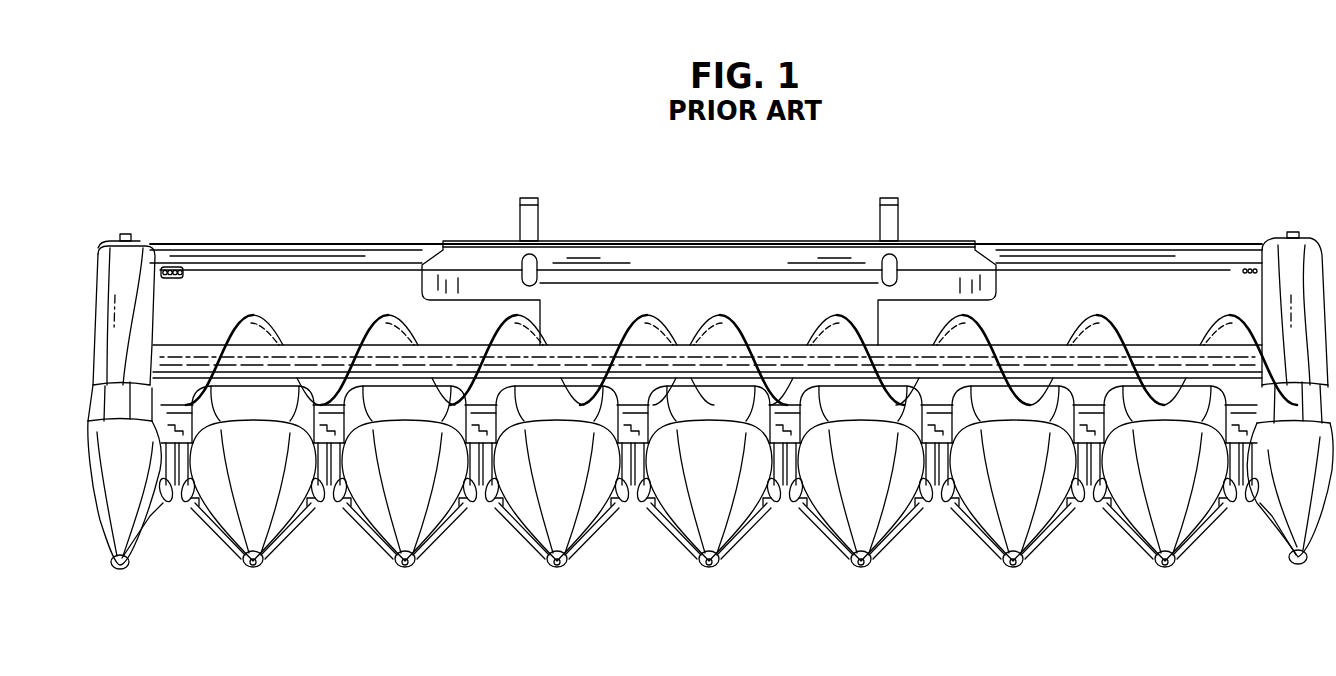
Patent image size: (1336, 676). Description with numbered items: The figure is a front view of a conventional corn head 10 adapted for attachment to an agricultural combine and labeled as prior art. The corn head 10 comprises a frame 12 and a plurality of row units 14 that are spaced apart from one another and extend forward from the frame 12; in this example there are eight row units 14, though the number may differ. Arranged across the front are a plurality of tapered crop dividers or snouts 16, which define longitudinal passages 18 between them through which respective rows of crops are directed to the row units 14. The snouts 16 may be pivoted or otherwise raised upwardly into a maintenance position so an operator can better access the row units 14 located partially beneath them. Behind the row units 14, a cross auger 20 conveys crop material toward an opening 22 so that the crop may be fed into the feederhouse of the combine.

The corn head 10 is at (198, 84).
The frame 12 is at (199, 234).
The row units 14 is at (156, 540).
The tapered crop dividers or snouts 16 is at (107, 491).
The longitudinal passages 18 is at (196, 557).
The cross auger 20 is at (338, 333).
The opening 22 is at (678, 306).